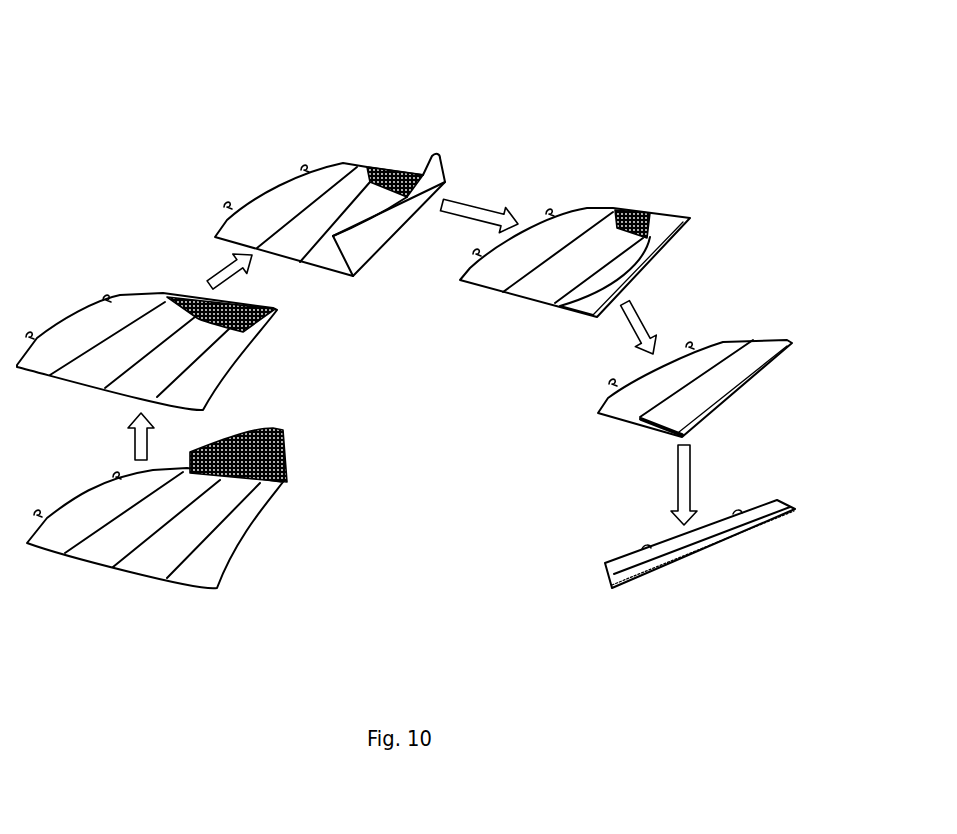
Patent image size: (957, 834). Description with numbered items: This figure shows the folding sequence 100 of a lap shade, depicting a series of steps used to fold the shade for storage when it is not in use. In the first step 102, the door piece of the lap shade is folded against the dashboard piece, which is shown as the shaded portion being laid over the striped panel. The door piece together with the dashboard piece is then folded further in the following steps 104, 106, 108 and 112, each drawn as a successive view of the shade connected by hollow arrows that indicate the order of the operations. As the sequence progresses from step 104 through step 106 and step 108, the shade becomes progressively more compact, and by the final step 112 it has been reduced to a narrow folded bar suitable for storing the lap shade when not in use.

The method of forming a composite panel 100 is at (598, 73).
The folding step 102 is at (113, 448).
The folding step 104 is at (200, 258).
The folding step 106 is at (488, 185).
The folding step 108 is at (660, 310).
The folding step 112 is at (705, 478).